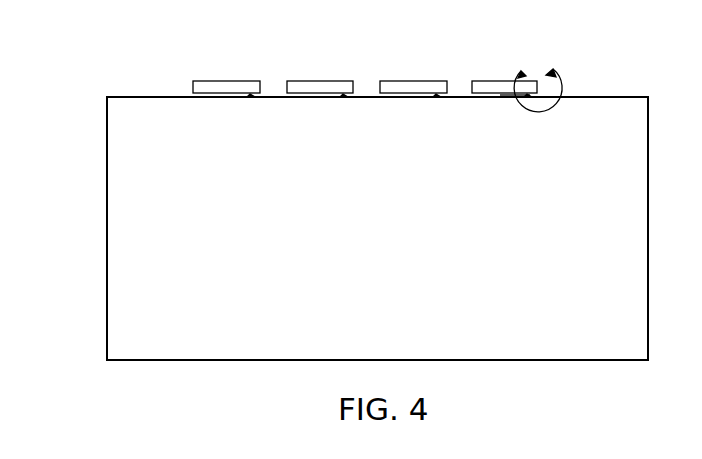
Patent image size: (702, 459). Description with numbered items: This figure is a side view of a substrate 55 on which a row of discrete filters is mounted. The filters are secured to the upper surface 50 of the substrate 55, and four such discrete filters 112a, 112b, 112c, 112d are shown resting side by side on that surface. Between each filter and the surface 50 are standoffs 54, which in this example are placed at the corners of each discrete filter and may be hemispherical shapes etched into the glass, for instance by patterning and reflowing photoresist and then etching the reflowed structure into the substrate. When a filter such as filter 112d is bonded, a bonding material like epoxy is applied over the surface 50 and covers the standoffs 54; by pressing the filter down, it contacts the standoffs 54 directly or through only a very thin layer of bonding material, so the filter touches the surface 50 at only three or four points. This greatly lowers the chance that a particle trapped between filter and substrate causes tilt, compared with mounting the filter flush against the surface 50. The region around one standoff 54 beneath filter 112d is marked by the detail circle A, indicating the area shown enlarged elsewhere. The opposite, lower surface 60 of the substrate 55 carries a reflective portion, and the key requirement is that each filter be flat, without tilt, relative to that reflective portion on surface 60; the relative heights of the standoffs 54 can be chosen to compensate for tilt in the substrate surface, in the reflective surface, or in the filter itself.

The surface 50 is at (620, 97).
The standoffs 54 is at (495, 95).
The substrate 55 is at (383, 232).
The surface 60 is at (620, 360).
The discrete filter 112a is at (222, 81).
The discrete filter 112b is at (320, 81).
The discrete filter 112c is at (413, 81).
The discrete filter 112d is at (507, 81).
The detail region A is at (538, 81).